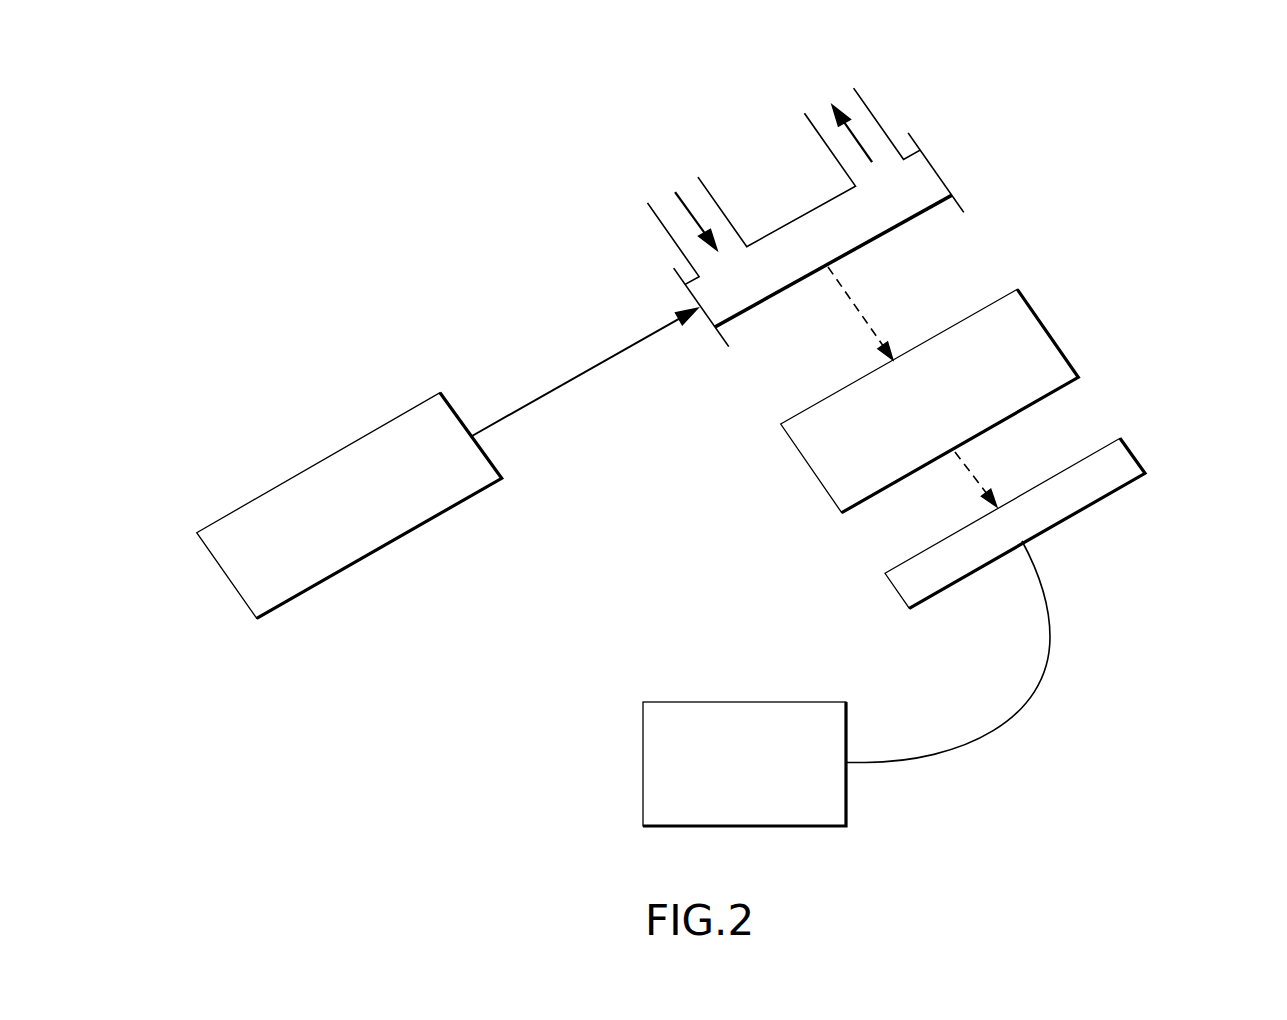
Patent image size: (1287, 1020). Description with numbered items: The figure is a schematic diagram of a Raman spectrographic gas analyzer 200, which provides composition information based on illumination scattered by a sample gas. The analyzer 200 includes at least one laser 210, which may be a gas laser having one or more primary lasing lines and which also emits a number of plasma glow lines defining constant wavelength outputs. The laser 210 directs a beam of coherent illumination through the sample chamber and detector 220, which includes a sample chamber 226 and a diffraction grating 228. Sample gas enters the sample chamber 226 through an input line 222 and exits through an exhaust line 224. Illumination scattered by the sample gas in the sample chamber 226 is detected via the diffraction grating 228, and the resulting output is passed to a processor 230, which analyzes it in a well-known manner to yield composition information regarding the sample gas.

The Raman spectrographic gas analyzer 200 is at (528, 172).
The laser 210 is at (308, 430).
The sample chamber and detector 220 is at (1174, 458).
The input line 222 is at (640, 240).
The exhaust line 224 is at (914, 108).
The sample chamber 226 is at (785, 191).
The diffraction grating 228 is at (1084, 320).
The processor 230 is at (608, 763).